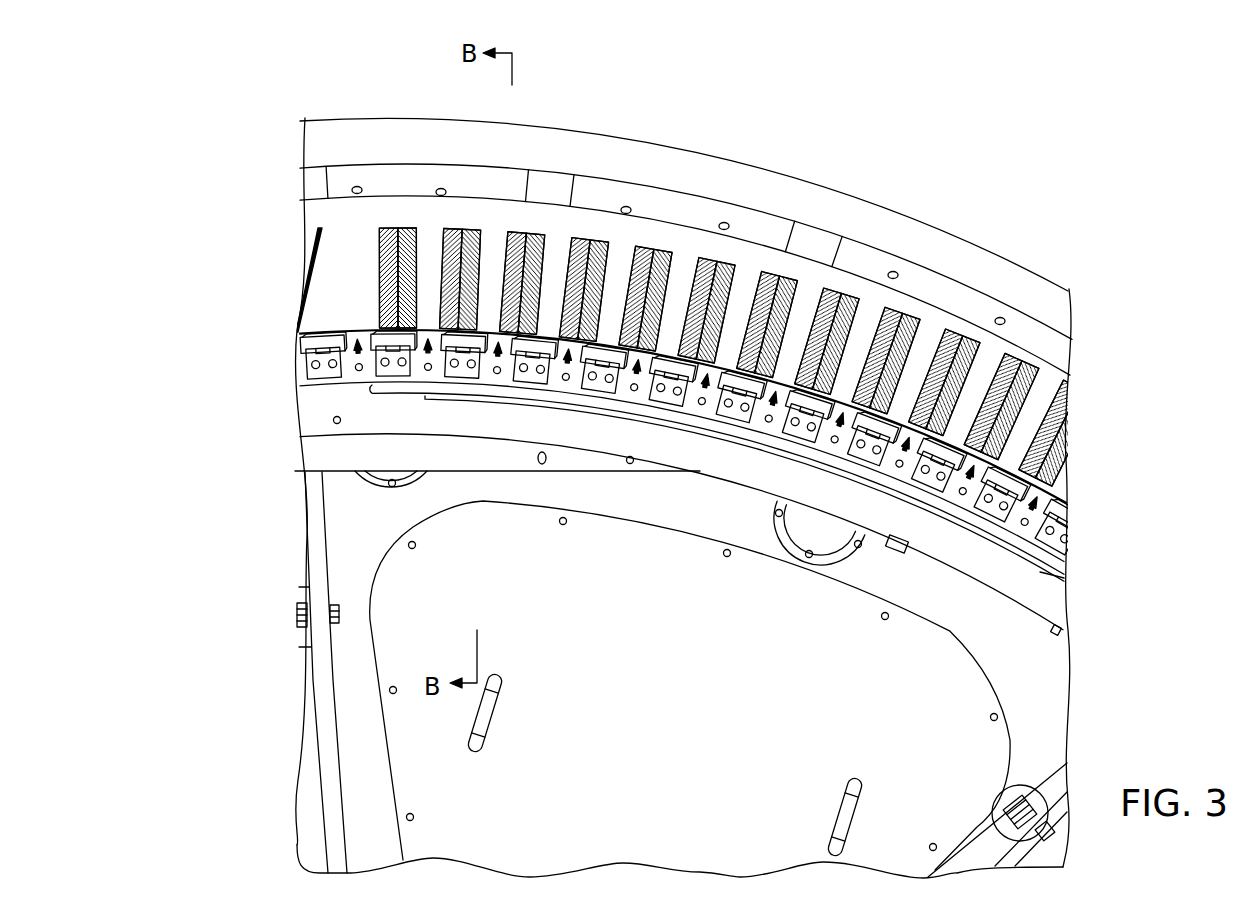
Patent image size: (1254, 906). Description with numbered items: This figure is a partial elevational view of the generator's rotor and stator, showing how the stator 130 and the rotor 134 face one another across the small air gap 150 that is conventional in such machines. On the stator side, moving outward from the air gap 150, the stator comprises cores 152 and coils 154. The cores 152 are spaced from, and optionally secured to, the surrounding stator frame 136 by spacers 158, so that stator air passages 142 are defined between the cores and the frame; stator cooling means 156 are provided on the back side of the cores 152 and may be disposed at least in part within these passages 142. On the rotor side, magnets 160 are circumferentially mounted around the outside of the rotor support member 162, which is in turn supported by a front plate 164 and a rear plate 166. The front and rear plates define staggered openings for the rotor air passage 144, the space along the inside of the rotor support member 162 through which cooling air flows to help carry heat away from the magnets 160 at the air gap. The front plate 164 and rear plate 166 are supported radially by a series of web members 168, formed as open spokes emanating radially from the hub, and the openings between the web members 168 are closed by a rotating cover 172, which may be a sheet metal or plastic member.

The stator 130 is at (291, 120).
The rotor 134 is at (291, 350).
The stator frame 136 is at (589, 142).
The stator air passages 142 is at (387, 176).
The rotor air passage 144 is at (500, 397).
The air gap 150 is at (290, 330).
The cores 152 is at (988, 355).
The coils 154 is at (1032, 380).
The cooling means 156 is at (727, 222).
The spacers 158 is at (538, 186).
The magnets 160 is at (1000, 540).
The rotor support member 162 is at (1040, 540).
The front plate 164 is at (713, 470).
The rear plate 166 is at (762, 550).
The web members 168 is at (330, 676).
The rotating cover 172 is at (708, 759).